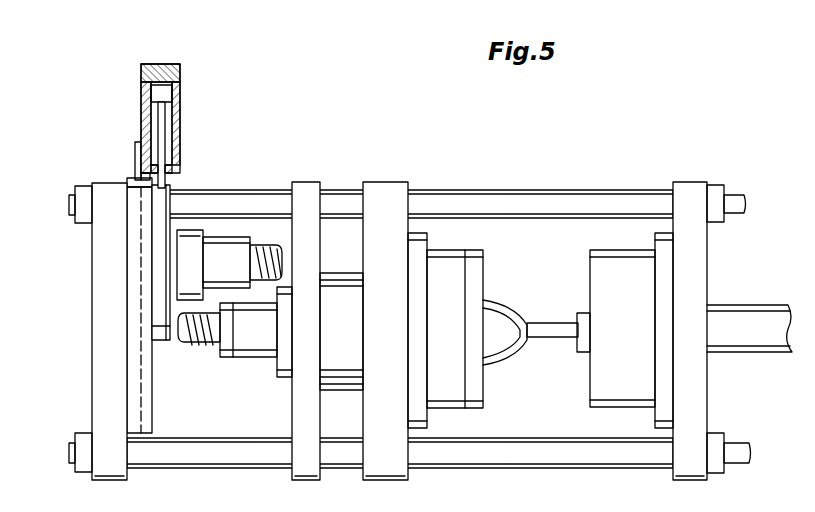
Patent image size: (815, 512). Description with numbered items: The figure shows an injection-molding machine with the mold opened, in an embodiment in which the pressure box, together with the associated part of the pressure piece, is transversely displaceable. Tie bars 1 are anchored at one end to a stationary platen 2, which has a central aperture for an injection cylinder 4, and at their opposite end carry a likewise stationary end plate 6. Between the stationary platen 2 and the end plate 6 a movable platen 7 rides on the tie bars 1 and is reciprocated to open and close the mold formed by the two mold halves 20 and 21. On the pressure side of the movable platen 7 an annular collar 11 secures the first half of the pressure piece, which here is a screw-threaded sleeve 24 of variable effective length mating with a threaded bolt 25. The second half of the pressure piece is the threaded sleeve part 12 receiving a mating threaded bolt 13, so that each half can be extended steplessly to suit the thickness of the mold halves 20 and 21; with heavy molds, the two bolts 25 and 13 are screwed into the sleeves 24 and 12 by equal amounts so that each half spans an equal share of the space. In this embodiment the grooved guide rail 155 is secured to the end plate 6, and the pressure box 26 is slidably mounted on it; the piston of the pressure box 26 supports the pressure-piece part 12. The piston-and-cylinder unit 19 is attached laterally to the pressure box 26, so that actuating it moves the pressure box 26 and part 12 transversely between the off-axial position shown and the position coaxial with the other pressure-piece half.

The tie bars 1 is at (522, 203).
The stationary platen 2 is at (697, 197).
The injection cylinder 4 is at (758, 322).
The end plate 6 is at (108, 205).
The movable platen 7 is at (382, 203).
The annular collar 11 is at (284, 357).
The second part of the pressure piece 12 is at (213, 255).
The threaded bolt 13 is at (267, 253).
The piston-and-cylinder unit 19 is at (173, 125).
The mold half 20 is at (452, 263).
The mold half 21 is at (625, 272).
The sleeve 24 is at (247, 333).
The threaded bolt 25 is at (208, 348).
The pressure box 26 is at (163, 320).
The grooved guide rail 155 is at (135, 272).